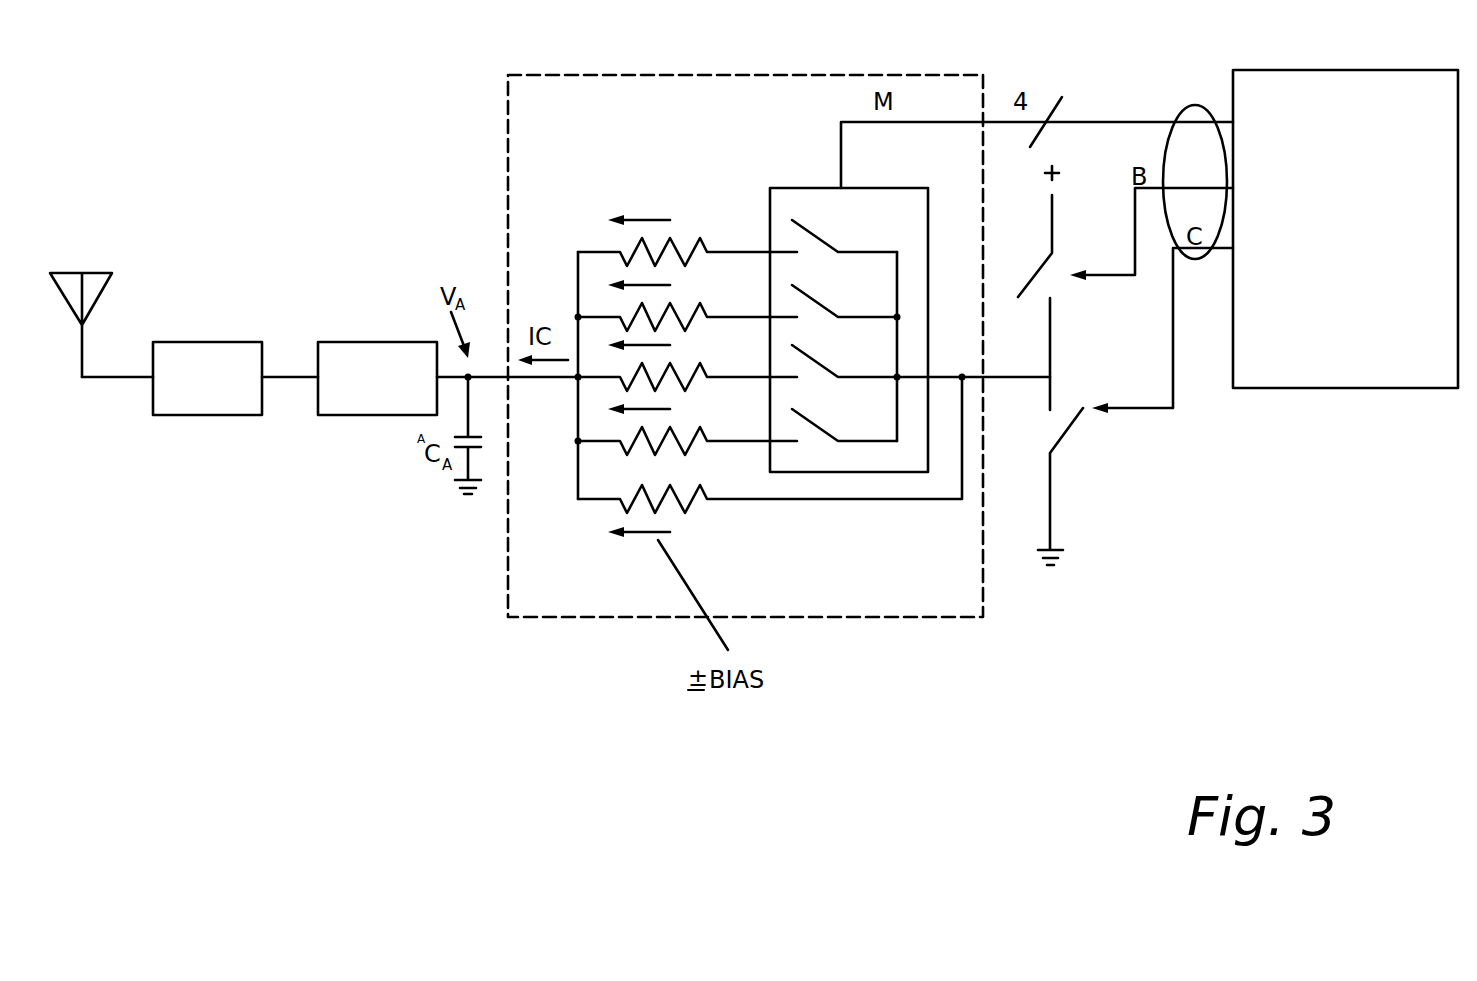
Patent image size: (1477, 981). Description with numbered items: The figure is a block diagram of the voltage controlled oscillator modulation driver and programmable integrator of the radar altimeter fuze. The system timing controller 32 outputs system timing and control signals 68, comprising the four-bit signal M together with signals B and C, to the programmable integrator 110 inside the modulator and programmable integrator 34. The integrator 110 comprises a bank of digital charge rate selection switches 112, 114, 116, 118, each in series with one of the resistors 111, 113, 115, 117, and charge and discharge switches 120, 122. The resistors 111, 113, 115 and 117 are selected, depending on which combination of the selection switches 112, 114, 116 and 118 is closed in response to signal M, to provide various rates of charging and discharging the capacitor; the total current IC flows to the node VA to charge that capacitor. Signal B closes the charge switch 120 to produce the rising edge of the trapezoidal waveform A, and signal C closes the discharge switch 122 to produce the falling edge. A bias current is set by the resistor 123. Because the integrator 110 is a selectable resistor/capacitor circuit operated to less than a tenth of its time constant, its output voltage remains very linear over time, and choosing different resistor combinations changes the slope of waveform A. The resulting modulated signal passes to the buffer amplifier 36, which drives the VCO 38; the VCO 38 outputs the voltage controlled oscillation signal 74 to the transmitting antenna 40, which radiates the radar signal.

The system timing controller 32 is at (1316, 307).
The modulator and programmable integrator 34 is at (770, 73).
The buffer amplifier 36 is at (327, 342).
The VCO 38 is at (165, 342).
The transmitting antenna 40 is at (65, 272).
The system timing and control signals 68 is at (1183, 103).
The voltage controlled oscillation signal 74 is at (142, 378).
The programmable integrator 110 is at (724, 199).
The resistor 111 is at (673, 265).
The selection switch 112 is at (818, 235).
The resistor 113 is at (673, 327).
The selection switch 114 is at (802, 290).
The resistor 115 is at (673, 387).
The selection switch 116 is at (802, 350).
The resistor 117 is at (673, 448).
The selection switch 118 is at (802, 420).
The charge switch 120 is at (1060, 283).
The discharge switch 122 is at (1088, 422).
The resistor 123 is at (695, 508).